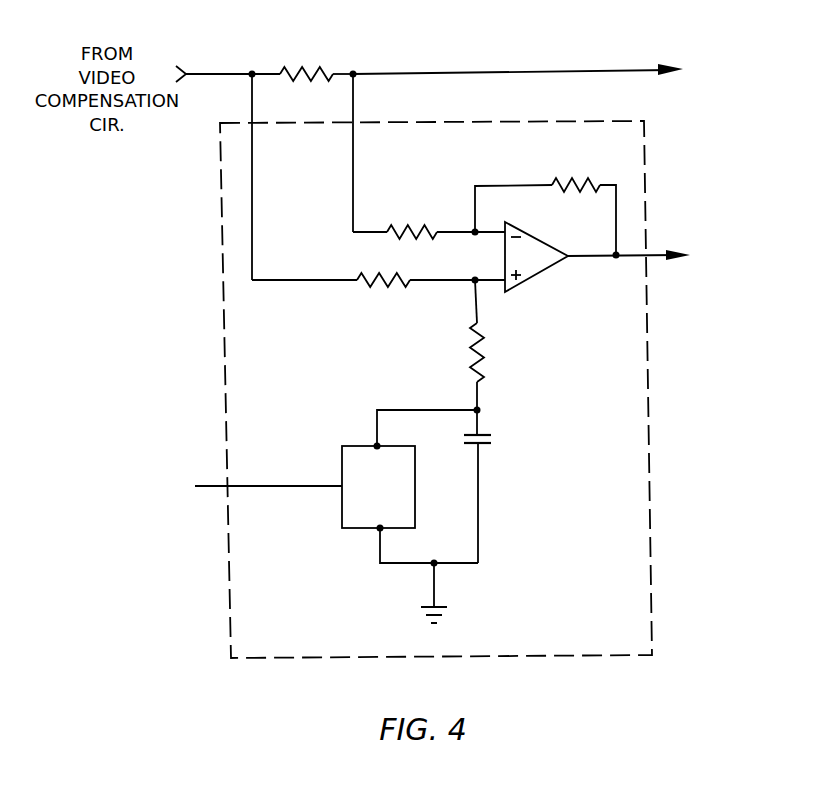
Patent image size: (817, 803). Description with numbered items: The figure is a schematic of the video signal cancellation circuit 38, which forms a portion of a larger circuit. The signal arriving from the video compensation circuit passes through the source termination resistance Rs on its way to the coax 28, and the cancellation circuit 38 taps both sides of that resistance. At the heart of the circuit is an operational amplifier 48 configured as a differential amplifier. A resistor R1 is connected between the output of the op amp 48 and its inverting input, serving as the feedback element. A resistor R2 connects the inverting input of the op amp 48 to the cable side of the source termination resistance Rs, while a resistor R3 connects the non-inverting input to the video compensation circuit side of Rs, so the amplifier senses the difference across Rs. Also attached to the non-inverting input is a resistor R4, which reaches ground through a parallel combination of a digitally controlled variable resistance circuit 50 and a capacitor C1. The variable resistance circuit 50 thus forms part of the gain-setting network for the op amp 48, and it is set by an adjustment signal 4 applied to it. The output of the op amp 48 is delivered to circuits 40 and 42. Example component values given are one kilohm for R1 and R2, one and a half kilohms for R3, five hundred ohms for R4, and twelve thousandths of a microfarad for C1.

The source termination resistance Rs is at (290, 78).
The resistor R1 is at (590, 178).
The resistor R2 is at (391, 230).
The resistor R3 is at (364, 288).
The resistor R4 is at (484, 328).
The capacitor C1 is at (490, 431).
The operational amplifier 48 is at (554, 268).
The variable resistance circuit 50 is at (416, 490).
The video signal cancellation circuit 38 is at (645, 178).
The adjustment signal 4 is at (261, 496).
The coax 28 is at (546, 81).
The circuit 40 is at (687, 254).
The circuit 42 is at (687, 254).